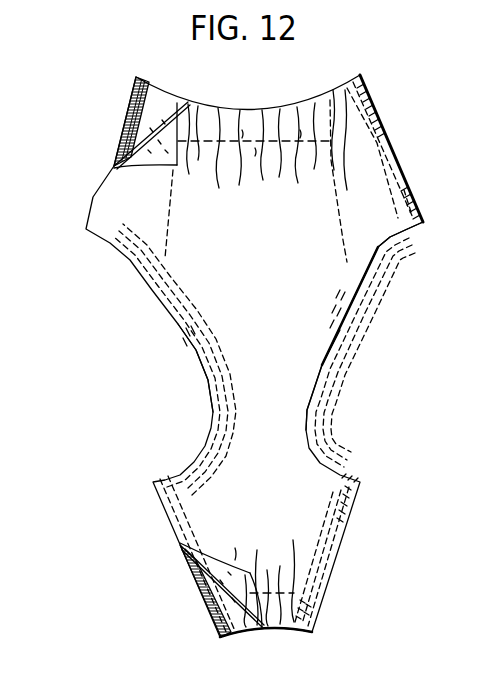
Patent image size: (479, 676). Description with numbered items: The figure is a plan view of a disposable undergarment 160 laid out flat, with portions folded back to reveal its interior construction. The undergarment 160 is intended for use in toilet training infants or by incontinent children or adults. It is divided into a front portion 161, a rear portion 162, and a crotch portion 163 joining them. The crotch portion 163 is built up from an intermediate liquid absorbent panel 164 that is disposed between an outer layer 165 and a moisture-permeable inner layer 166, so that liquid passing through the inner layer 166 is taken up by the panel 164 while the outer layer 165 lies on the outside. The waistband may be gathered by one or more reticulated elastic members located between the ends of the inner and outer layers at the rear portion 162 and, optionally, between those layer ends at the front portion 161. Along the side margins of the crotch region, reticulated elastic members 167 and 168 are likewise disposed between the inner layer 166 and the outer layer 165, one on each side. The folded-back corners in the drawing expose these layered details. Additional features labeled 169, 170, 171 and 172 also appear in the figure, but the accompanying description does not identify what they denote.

The disposable undergarment 160 is at (126, 259).
The front portion 161 is at (292, 535).
The rear portion 162 is at (269, 108).
The crotch portion 163 is at (213, 413).
The intermediate liquid absorbent panel 164 is at (313, 260).
The outer layer 165 is at (158, 97).
The moisture-permeable inner layer 166 is at (362, 172).
The reticulated elastic member 167 is at (182, 325).
The reticulated elastic member 168 is at (329, 333).
The leg opening fold 169 is at (180, 503).
The right leg edge 170 is at (337, 510).
The shoulder edge binding 171 is at (400, 166).
The elastic strap binding 172 is at (117, 124).